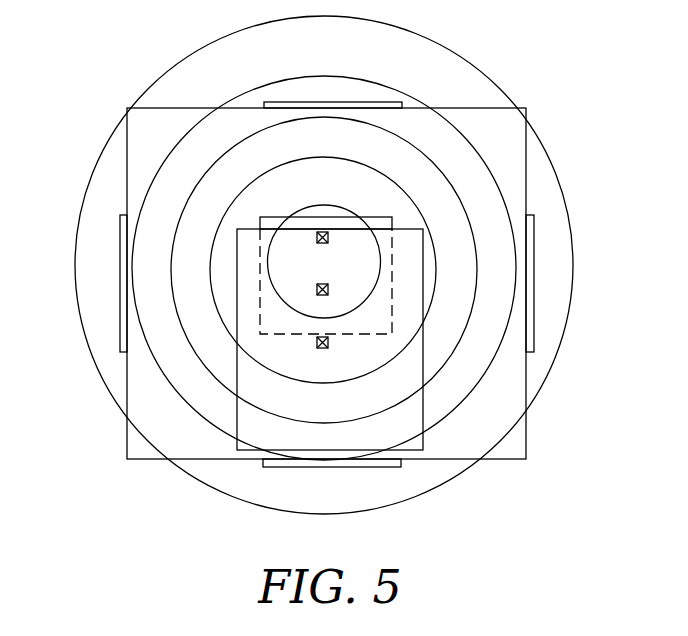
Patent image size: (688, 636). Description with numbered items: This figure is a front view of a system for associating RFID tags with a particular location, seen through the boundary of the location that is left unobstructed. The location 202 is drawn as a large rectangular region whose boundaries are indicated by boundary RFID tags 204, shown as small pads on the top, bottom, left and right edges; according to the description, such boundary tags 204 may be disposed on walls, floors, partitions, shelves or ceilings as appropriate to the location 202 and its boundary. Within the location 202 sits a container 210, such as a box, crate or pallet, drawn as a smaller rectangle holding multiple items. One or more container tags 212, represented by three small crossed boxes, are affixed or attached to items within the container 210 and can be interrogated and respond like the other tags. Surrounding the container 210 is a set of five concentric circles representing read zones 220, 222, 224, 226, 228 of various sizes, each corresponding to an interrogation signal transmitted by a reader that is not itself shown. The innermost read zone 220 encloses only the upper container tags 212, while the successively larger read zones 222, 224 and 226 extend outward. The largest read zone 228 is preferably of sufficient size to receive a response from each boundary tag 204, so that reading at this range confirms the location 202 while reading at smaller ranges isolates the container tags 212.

The location 202 is at (127, 141).
The boundary RFID tags 204 is at (291, 101).
The container 210 is at (245, 425).
The container tags 212 is at (320, 284).
The read zone 220 is at (322, 205).
The read zone 222 is at (393, 180).
The read zone 224 is at (460, 198).
The read zone 226 is at (508, 212).
The largest read zone 228 is at (567, 212).